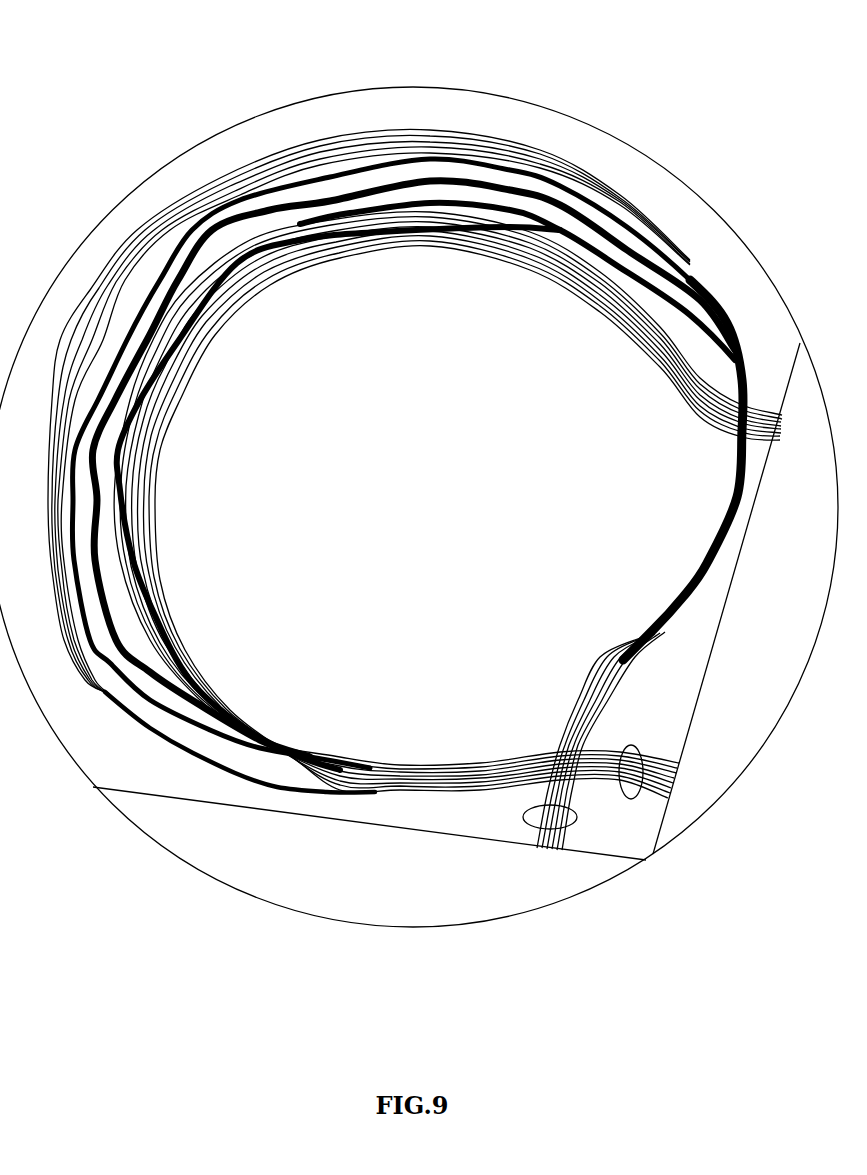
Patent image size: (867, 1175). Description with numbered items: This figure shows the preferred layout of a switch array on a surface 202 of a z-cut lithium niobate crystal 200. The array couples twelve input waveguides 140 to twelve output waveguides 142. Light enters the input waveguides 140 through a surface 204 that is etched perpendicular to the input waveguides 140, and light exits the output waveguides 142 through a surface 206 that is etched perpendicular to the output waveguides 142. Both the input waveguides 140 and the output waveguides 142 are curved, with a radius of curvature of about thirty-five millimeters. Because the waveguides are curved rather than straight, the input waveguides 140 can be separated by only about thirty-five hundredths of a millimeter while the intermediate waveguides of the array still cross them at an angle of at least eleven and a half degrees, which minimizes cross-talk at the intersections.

The z-cut lithium niobate crystal 200 is at (426, 86).
The surface 202 is at (356, 508).
The surface 204 is at (403, 828).
The surface 206 is at (708, 663).
The input waveguides 140 is at (641, 745).
The output waveguides 142 is at (578, 817).